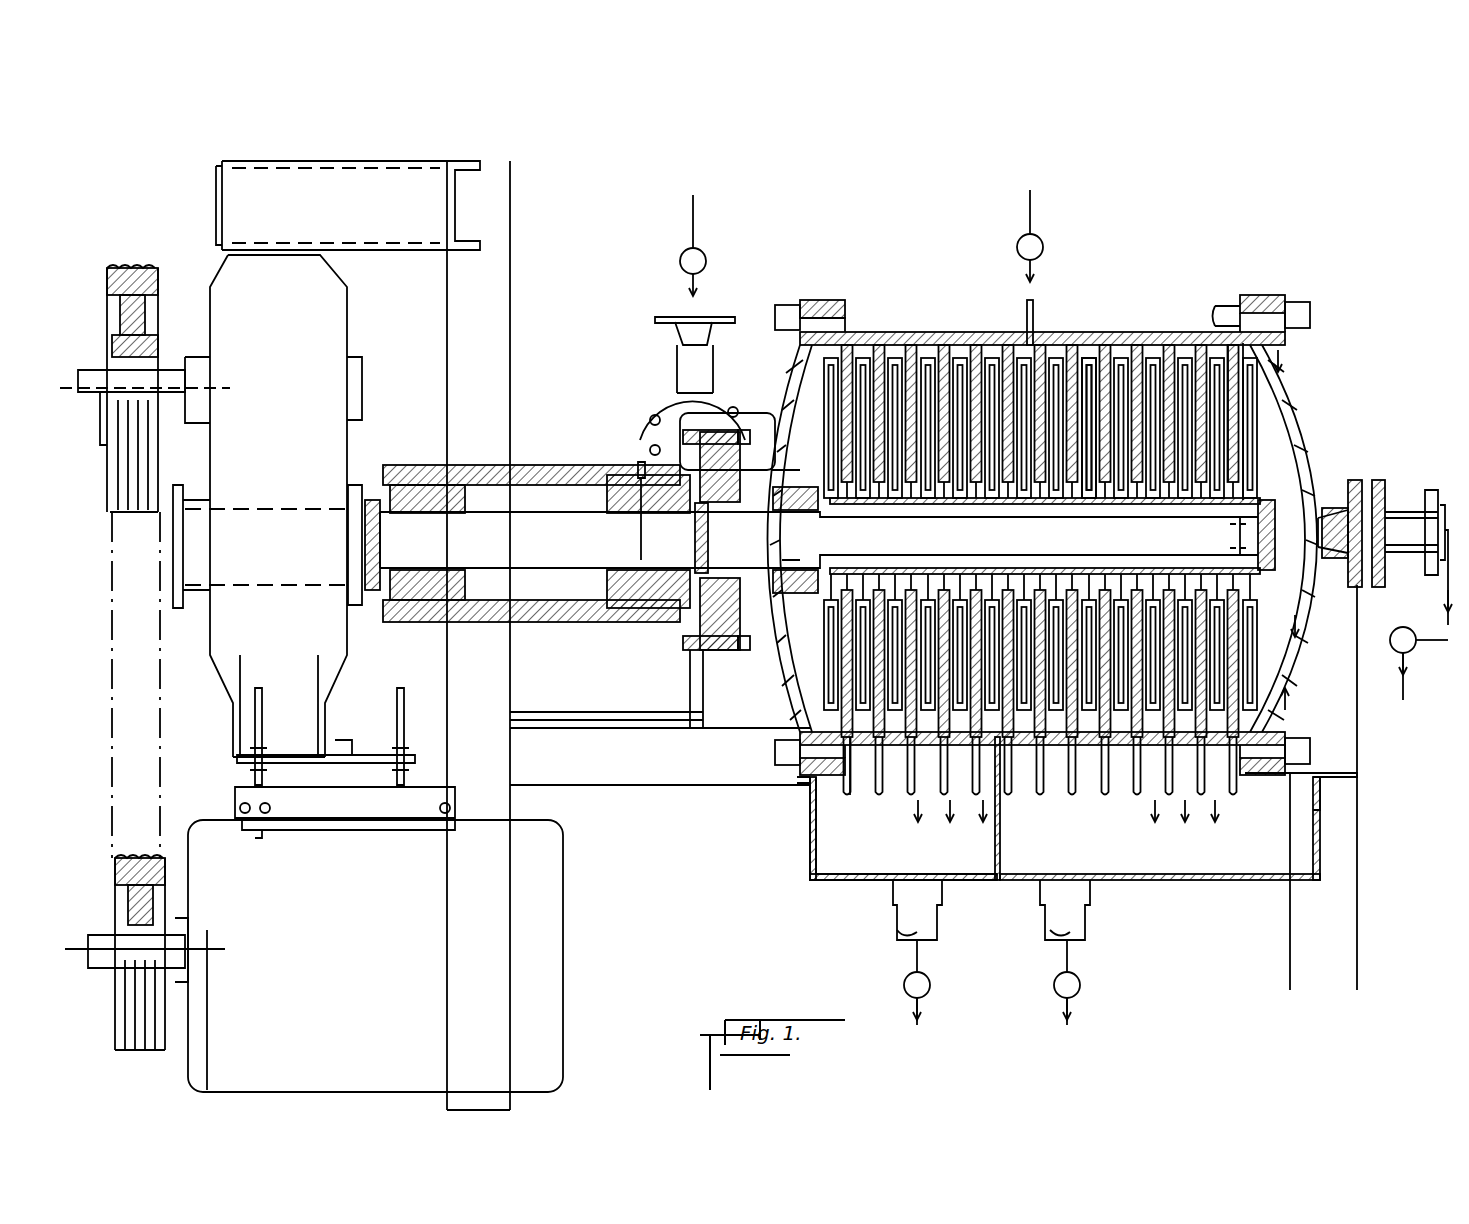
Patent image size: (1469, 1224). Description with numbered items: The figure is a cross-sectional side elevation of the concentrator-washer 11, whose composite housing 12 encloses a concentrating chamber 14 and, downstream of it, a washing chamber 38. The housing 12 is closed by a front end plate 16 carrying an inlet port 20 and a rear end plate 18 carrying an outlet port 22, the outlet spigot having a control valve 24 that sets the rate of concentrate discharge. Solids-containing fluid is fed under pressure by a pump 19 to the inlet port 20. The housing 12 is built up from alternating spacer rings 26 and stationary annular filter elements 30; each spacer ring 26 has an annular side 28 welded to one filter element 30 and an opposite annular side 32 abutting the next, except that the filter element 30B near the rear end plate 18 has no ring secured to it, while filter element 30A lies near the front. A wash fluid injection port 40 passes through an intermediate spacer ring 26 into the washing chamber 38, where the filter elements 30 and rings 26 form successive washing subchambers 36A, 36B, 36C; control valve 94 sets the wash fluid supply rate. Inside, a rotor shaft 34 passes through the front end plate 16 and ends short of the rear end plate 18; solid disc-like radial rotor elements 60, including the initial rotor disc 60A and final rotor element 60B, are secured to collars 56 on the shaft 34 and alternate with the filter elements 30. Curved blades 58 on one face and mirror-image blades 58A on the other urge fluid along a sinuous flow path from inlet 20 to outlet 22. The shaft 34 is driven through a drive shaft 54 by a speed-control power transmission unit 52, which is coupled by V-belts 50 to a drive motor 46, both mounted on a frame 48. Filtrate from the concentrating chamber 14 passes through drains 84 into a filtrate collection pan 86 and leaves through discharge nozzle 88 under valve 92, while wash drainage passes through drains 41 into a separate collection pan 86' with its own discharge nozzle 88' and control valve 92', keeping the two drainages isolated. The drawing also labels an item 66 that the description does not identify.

The concentrator-washer 11 is at (806, 256).
The housing 12 is at (992, 330).
The concentrating chamber 14 is at (897, 358).
The front end plate 16 is at (805, 356).
The rear end plate 18 is at (1310, 440).
The pump 19 is at (680, 256).
The inlet port 20 is at (800, 440).
The outlet port 22 is at (1320, 505).
The control valve 24 is at (1408, 652).
The spacer ring 26 is at (1195, 332).
The annular side 28 is at (1045, 345).
The filter element 30 is at (1122, 358).
The filter element 30A is at (864, 358).
The filter element 30B is at (1255, 340).
The opposite annular side 32 is at (1092, 358).
The rotor shaft 34 is at (934, 547).
The washing subchamber 36A is at (1040, 740).
The washing subchamber 36B is at (1068, 740).
The washing subchamber 36C is at (1105, 740).
The washing chamber 38 is at (1056, 358).
The wash fluid injection port 40 is at (1033, 310).
The drain 41 is at (1236, 795).
The drive motor 46 is at (352, 935).
The frame 48 is at (510, 905).
The V-belts 50 is at (237, 758).
The speed-control power transmission unit 52 is at (296, 377).
The drive shaft 54 is at (372, 498).
The collar 56 is at (1000, 574).
The blades 58 is at (848, 345).
The blades 58A is at (882, 345).
The radial rotor element 60 is at (913, 350).
The initial rotor disc 60A is at (830, 376).
The final rotor element 60B is at (1255, 408).
The upper filter frames 66 is at (895, 498).
The drain 84 is at (882, 795).
The filtrate collection pan 86 is at (870, 828).
The collection pan 86' is at (1176, 827).
The discharge nozzle 88 is at (891, 911).
The discharge nozzle 88' is at (1095, 910).
The valve 92 is at (887, 982).
The control valve 92' is at (1102, 982).
The control valve 94 is at (1043, 244).